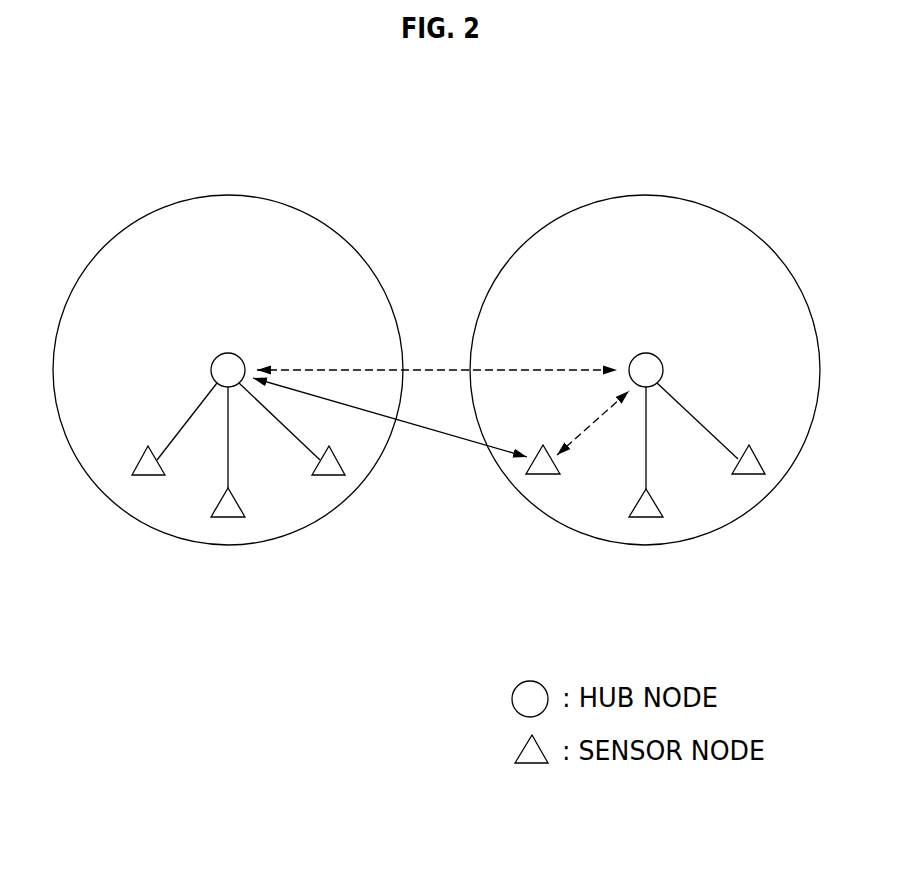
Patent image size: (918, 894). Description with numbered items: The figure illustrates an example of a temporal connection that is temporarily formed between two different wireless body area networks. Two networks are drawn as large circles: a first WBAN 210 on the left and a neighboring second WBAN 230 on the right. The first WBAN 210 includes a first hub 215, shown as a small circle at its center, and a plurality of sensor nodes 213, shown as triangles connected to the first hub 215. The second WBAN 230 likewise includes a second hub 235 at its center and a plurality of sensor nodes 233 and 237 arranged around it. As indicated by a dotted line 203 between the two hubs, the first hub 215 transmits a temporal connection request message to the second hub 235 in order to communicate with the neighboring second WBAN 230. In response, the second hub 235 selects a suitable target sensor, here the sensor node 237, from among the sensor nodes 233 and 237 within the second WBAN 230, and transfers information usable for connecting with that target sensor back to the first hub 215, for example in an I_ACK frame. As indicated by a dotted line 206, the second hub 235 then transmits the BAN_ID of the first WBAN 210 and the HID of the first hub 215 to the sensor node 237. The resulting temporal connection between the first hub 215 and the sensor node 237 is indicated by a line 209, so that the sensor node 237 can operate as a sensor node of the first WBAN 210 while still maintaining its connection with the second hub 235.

The first WBAN 210 is at (224, 195).
The second WBAN 230 is at (644, 195).
The first hub 215 is at (227, 353).
The second hub 235 is at (644, 353).
The sensor nodes 213 is at (148, 476).
The sensor nodes 233 is at (646, 518).
The sensor node 237 is at (542, 475).
The dotted line 203 is at (433, 368).
The dotted line 206 is at (593, 420).
The line 209 is at (423, 428).